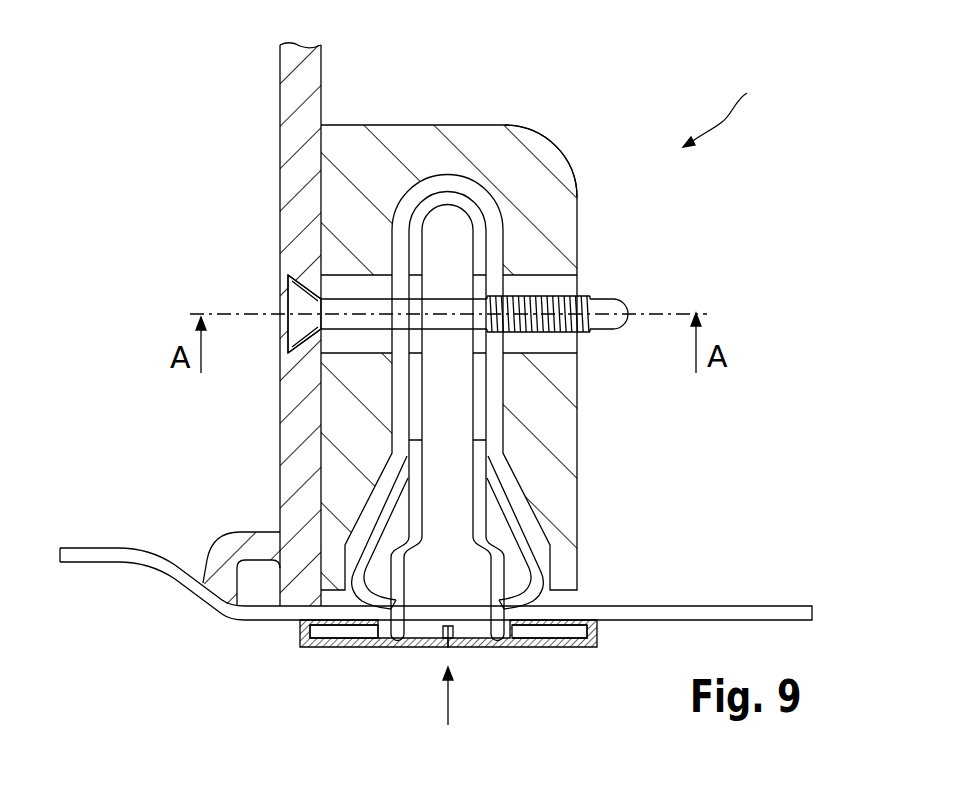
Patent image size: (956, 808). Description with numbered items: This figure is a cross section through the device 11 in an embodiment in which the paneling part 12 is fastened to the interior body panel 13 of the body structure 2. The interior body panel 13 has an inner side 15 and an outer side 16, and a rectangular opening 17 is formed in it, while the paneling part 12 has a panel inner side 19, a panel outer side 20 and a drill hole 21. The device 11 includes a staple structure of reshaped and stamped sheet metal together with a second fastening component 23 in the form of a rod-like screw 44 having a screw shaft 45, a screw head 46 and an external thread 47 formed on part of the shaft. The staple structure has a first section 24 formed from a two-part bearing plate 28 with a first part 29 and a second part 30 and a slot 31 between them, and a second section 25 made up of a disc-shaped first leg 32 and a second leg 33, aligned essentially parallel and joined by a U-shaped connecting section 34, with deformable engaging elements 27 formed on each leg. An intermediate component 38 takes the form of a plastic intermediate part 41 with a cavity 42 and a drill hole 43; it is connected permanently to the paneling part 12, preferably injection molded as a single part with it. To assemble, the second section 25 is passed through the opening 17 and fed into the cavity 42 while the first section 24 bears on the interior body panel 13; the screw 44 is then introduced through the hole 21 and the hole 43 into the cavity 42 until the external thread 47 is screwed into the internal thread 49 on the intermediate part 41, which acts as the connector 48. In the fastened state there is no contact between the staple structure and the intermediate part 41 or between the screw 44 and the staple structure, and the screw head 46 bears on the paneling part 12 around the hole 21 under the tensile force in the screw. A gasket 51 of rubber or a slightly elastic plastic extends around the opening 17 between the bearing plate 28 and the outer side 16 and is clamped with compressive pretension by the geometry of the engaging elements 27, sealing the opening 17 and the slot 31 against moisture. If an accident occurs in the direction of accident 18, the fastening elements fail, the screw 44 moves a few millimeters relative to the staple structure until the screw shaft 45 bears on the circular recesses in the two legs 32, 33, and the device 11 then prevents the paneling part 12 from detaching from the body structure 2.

The body structure 2 is at (448, 606).
The device 11 is at (729, 110).
The paneling part 12 is at (300, 118).
The interior body panel 13 is at (105, 553).
The inner side 15 is at (720, 606).
The outer side 16 is at (661, 612).
The opening 17 is at (465, 612).
The direction of accident 18 is at (450, 707).
The panel inner side 19 is at (281, 72).
The panel outer side 20 is at (322, 72).
The drill hole 21 is at (298, 322).
The second fastening component 23 is at (451, 314).
The first section 24 is at (473, 671).
The second section 25 is at (427, 349).
The engaging elements 27 is at (390, 500).
The bearing plate 28 is at (473, 671).
The first part 29 is at (560, 636).
The second part 30 is at (360, 636).
The slot 31 is at (445, 645).
The first leg 32 is at (480, 243).
The second leg 33 is at (418, 250).
The U-shaped connecting section 34 is at (440, 193).
The intermediate component 38 is at (495, 324).
The intermediate part 41 is at (522, 150).
The cavity 42 is at (520, 155).
The drill hole 43 is at (355, 283).
The screw 44 is at (451, 314).
The screw shaft 45 is at (686, 336).
The screw head 46 is at (300, 295).
The external thread 47 is at (608, 310).
The connector 48 is at (614, 280).
The internal thread 49 is at (575, 298).
The gasket 51 is at (323, 626).